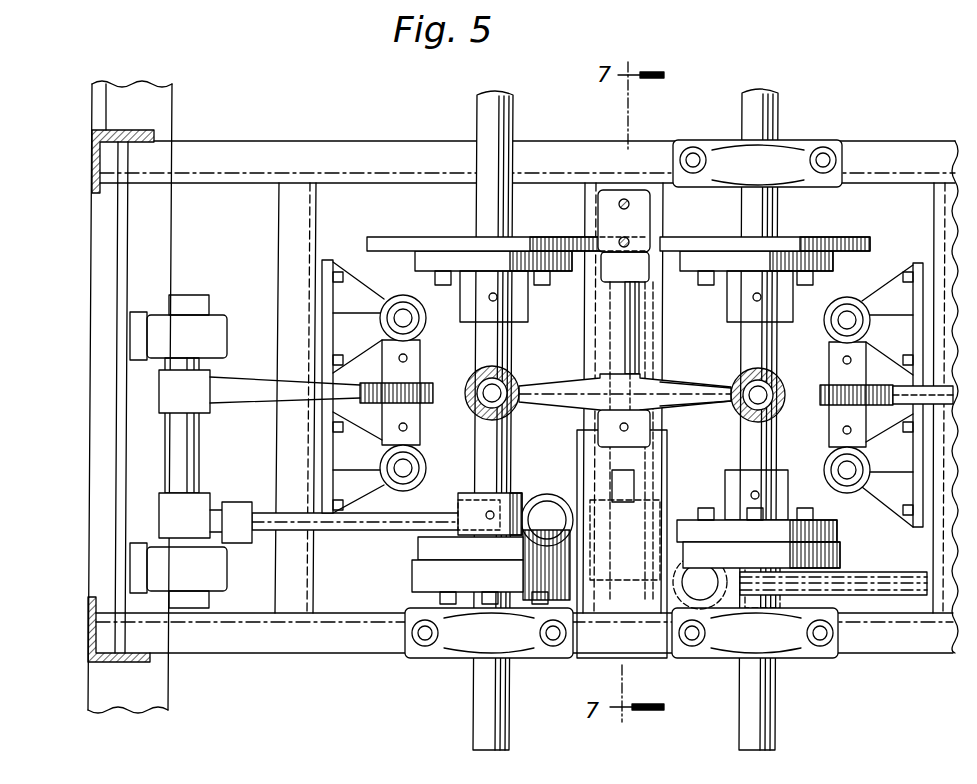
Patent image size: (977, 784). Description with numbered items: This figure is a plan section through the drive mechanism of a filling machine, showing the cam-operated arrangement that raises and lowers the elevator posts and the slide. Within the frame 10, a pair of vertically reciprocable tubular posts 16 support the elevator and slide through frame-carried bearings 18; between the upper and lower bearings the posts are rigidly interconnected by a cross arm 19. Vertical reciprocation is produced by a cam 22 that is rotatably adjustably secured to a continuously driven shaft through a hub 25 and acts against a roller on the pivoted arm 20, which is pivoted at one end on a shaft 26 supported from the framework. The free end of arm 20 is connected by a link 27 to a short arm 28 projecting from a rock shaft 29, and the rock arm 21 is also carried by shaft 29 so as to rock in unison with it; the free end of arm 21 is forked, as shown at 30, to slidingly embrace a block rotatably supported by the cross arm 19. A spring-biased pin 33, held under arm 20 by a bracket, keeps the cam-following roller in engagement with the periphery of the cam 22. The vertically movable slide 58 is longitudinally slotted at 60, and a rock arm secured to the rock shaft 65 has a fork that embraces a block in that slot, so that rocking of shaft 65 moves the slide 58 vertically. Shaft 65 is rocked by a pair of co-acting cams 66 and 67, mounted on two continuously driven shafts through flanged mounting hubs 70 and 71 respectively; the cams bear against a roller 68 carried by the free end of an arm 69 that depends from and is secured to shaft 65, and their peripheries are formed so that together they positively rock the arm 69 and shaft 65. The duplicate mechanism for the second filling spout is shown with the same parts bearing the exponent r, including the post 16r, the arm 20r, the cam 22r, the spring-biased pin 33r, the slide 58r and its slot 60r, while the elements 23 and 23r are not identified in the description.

The frame 10 is at (873, 155).
The tubular post 16 is at (427, 332).
The tubular post 16r is at (830, 322).
The frame-carried bearing 18 is at (422, 298).
The cross arm 19 is at (425, 362).
The pivoted arm 20 is at (518, 427).
The pivoted arm 20r is at (780, 226).
The rock arm 21 is at (262, 396).
The cam 22 is at (418, 549).
The cam 22r is at (842, 556).
The block 23 is at (412, 578).
The block (right) 23r is at (840, 528).
The hub 25 is at (458, 499).
The pivot shaft 26 is at (616, 475).
The link 27 is at (252, 504).
The short arm 28 is at (216, 513).
The rock shaft 29 is at (200, 446).
The fork 30 is at (570, 492).
The spring-biased pin 33 is at (545, 505).
The spring-biased pin 33r is at (722, 504).
The slide 58 is at (505, 380).
The slide 58r is at (782, 388).
The slot 60 is at (562, 384).
The slot 60r is at (690, 392).
The rock shaft 65 is at (622, 326).
The cam 66 is at (455, 245).
The cam 67 is at (715, 245).
The roller 68 is at (596, 224).
The arm 69 is at (600, 290).
The flanged mounting hub 70 is at (515, 297).
The flanged mounting hub 71 is at (795, 297).